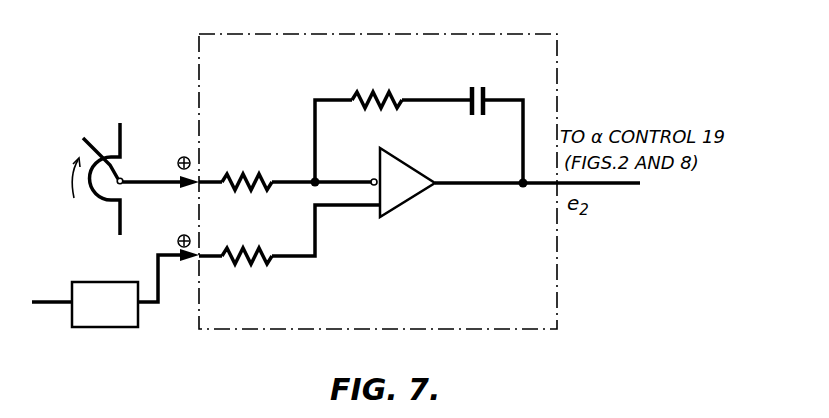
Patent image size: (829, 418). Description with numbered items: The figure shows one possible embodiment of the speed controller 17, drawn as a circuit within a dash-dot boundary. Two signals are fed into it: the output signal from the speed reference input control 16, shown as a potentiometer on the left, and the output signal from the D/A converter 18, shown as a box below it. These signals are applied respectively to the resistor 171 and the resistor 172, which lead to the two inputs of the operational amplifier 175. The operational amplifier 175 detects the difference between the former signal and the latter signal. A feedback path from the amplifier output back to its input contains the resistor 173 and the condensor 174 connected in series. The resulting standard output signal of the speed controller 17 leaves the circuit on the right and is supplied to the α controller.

The speed reference input control 16 is at (100, 197).
The speed controller 17 is at (212, 62).
The D/A converter 18 is at (108, 328).
The resistor 171 is at (245, 172).
The resistor 172 is at (252, 263).
The resistor 173 is at (378, 97).
The condensor 174 is at (488, 95).
The operational amplifier 175 is at (409, 205).